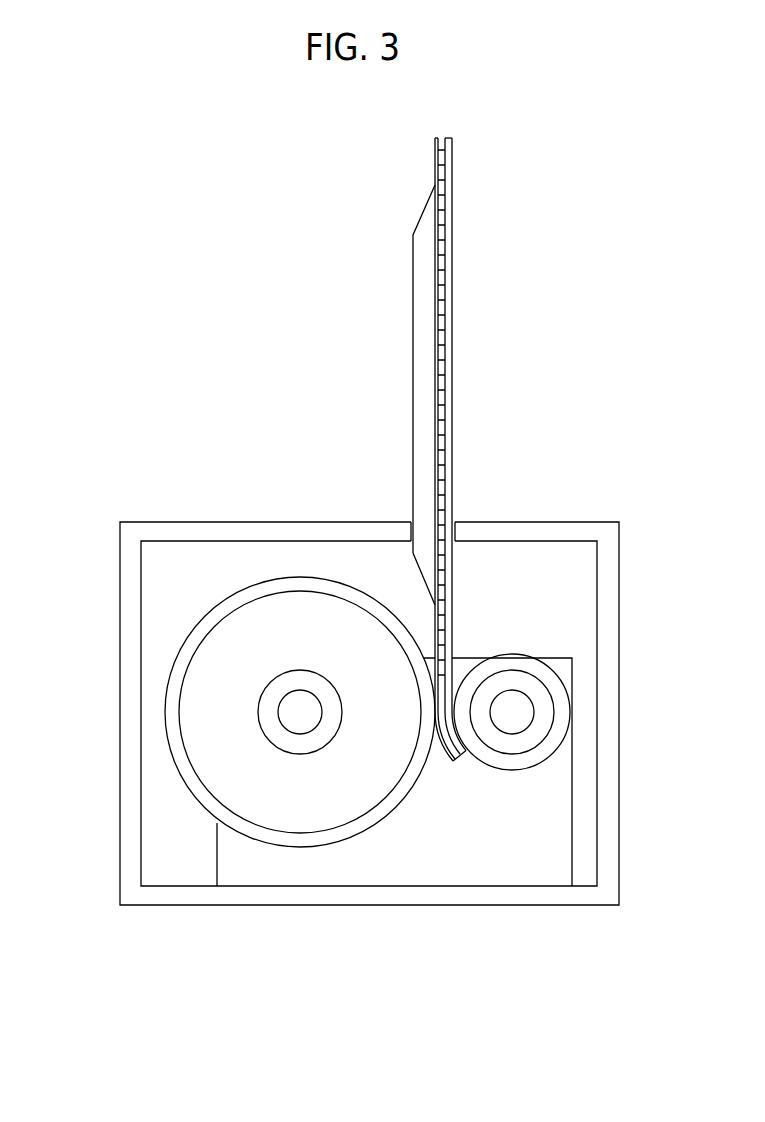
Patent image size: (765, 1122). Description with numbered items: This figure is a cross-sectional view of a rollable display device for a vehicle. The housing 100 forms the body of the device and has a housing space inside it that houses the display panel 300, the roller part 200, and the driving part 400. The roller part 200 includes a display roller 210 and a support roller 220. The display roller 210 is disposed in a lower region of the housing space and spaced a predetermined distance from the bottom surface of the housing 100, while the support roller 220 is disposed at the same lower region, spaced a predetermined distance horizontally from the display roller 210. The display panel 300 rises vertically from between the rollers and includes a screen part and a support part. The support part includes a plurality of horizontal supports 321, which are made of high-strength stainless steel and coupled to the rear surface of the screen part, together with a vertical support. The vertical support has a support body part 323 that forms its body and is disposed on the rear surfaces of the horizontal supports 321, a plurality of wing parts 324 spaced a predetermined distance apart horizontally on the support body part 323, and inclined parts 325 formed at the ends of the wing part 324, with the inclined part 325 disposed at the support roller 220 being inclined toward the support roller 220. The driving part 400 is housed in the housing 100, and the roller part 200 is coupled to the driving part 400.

The housing 100 is at (138, 497).
The roller part 200 is at (367, 811).
The display roller 210 is at (512, 712).
The support roller 220 is at (300, 713).
The display panel 300 is at (415, 449).
The horizontal support 321 is at (438, 365).
The support body part 323 is at (435, 167).
The wing part 324 is at (349, 395).
The inclined part 325 is at (420, 577).
The driving part 400 is at (478, 850).